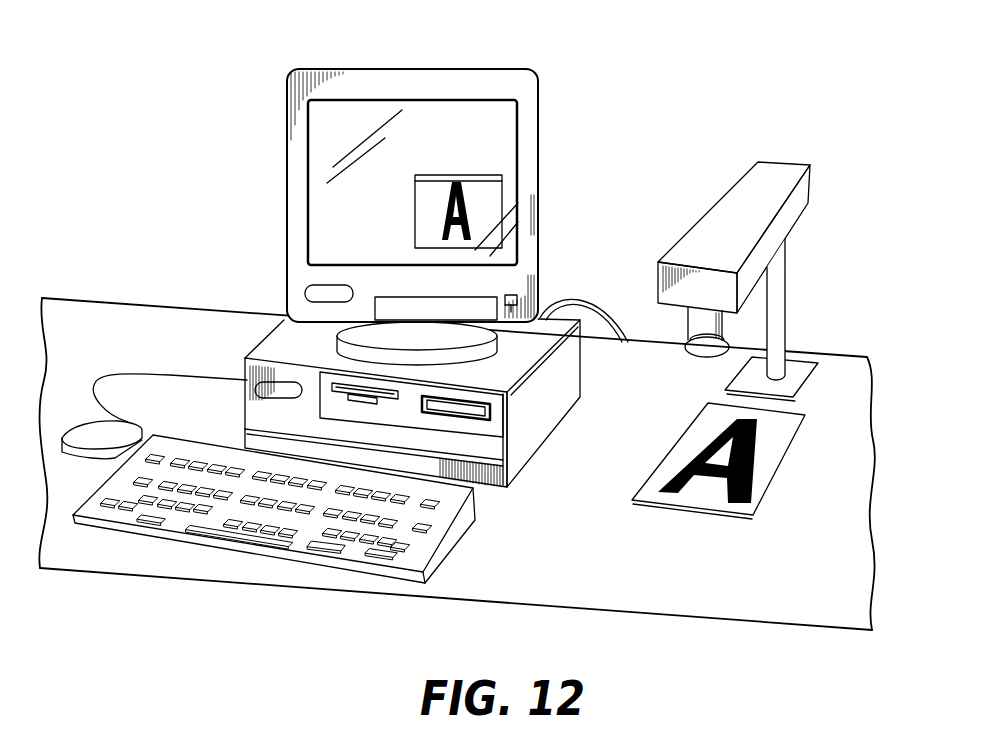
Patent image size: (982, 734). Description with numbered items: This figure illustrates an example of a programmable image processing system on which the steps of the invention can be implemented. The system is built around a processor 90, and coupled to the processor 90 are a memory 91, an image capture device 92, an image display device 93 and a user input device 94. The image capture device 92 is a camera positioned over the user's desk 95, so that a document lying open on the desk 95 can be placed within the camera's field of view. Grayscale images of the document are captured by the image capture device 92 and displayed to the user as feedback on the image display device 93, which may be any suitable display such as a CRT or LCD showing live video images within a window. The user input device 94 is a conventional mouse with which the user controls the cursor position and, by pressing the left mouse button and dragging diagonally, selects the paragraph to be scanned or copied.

The processor 90 is at (555, 378).
The memory 91 is at (457, 407).
The image capture device 92 is at (702, 323).
The image display device 93 is at (342, 70).
The user input device 94 is at (92, 427).
The desk 95 is at (628, 443).